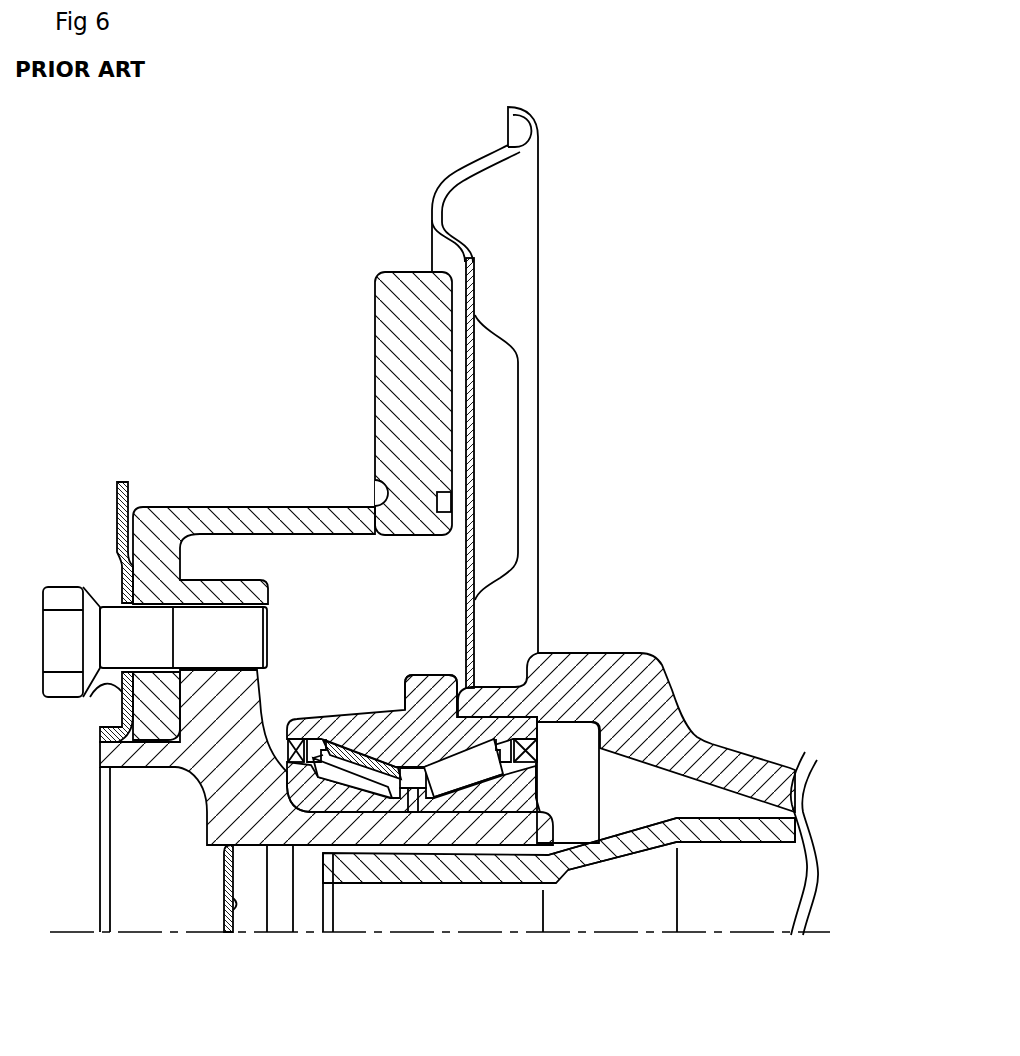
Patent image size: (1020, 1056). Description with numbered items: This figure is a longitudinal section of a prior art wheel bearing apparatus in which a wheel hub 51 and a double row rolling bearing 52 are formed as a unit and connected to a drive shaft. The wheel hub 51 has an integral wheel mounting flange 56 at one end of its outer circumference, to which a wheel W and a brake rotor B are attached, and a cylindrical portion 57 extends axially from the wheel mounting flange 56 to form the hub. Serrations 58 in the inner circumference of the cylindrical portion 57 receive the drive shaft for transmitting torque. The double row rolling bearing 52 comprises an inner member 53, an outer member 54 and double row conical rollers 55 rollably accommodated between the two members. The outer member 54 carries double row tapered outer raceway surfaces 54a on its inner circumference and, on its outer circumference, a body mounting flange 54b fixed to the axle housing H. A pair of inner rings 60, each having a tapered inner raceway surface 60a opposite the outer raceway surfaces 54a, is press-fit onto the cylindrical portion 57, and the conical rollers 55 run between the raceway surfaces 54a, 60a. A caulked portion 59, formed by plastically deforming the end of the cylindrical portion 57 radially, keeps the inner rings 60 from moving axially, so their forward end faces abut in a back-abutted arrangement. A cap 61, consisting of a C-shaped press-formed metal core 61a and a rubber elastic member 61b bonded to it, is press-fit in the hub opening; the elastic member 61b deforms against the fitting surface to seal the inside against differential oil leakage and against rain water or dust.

The brake rotor B is at (402, 373).
The wheel W is at (117, 490).
The axle housing H is at (593, 672).
The wheel hub 51 is at (187, 755).
The double row rolling bearing 52 is at (392, 683).
The inner member 53 is at (342, 840).
The outer member 54 is at (357, 716).
The outer raceway surface 54a is at (330, 757).
The body mounting flange 54b is at (432, 675).
The conical roller 55 is at (292, 762).
The wheel mounting flange 56 is at (200, 586).
The cylindrical portion 57 is at (427, 883).
The serrations 58 is at (493, 883).
The caulked portion 59 is at (547, 807).
The inner ring 60 is at (223, 843).
The inner raceway surface 60a is at (333, 773).
The cap 61 is at (178, 948).
The metal core 61a is at (222, 932).
The elastic member 61b is at (223, 843).